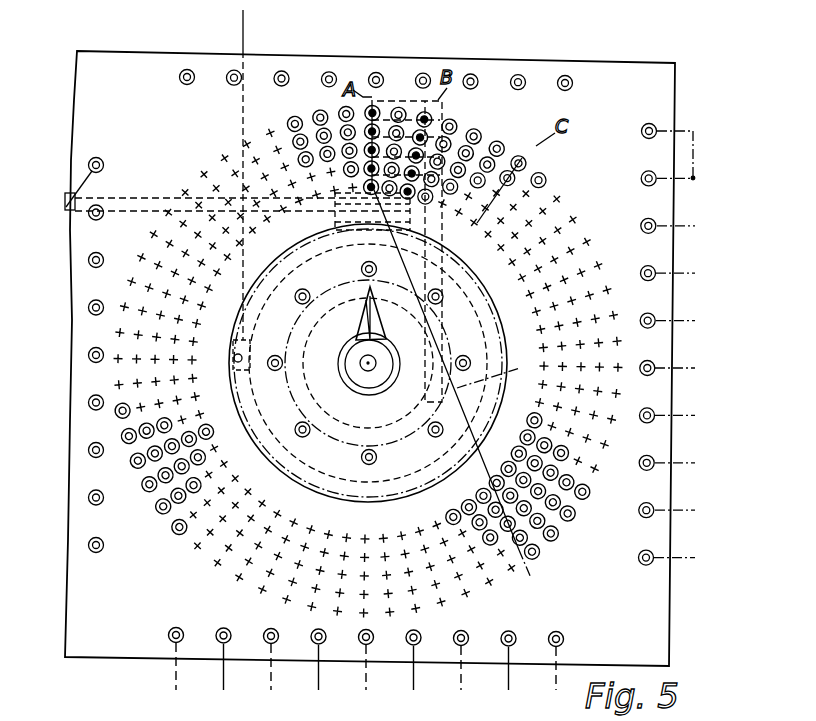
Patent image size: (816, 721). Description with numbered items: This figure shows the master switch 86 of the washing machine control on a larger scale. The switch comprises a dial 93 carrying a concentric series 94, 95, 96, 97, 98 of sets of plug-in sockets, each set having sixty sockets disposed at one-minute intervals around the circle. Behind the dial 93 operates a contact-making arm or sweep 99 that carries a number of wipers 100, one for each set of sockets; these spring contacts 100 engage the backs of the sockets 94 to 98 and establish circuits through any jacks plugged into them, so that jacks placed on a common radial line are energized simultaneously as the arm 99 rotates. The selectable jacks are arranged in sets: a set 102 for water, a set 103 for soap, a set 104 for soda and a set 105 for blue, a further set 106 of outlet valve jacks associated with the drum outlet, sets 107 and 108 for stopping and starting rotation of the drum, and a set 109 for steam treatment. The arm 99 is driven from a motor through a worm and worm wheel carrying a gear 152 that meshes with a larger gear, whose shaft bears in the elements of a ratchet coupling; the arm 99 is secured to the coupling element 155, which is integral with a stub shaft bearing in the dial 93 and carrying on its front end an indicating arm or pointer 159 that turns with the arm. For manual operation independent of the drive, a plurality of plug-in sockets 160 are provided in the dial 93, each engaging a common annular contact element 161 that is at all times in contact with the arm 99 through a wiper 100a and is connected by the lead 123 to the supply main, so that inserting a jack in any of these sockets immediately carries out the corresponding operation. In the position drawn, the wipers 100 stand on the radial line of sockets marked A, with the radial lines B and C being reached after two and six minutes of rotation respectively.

The master switch 86 is at (697, 92).
The dial 93 is at (633, 120).
The set of plug-in sockets 94 is at (545, 176).
The set of plug-in sockets 95 is at (513, 180).
The set of plug-in sockets 96 is at (480, 183).
The set of plug-in sockets 97 is at (452, 190).
The set of plug-in sockets 98 is at (432, 199).
The contact-making arm 99 is at (445, 106).
The wipers 100 is at (393, 195).
The wiper 100a is at (374, 249).
The set of jacks for water 102 is at (655, 466).
The set of jacks for soap 103 is at (655, 371).
The set of jacks for soda 104 is at (656, 276).
The set of jacks for blue 105 is at (656, 181).
The set of outlet valve jacks 106 is at (90, 541).
The set of jacks for stopping drum rotation 107 is at (562, 75).
The set of jacks for starting drum rotation 108 is at (468, 73).
The set of jacks for steam treatment 109 is at (326, 71).
The lead 123 is at (245, 20).
The gear 152 is at (355, 208).
The ratchet coupling element 155 is at (345, 413).
The indicating arm or pointer 159 is at (363, 325).
The plug-in sockets 160 is at (282, 350).
The annular contact element 161 is at (503, 370).